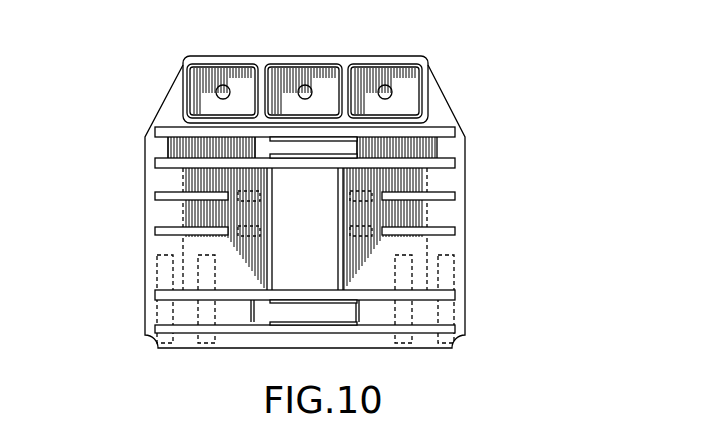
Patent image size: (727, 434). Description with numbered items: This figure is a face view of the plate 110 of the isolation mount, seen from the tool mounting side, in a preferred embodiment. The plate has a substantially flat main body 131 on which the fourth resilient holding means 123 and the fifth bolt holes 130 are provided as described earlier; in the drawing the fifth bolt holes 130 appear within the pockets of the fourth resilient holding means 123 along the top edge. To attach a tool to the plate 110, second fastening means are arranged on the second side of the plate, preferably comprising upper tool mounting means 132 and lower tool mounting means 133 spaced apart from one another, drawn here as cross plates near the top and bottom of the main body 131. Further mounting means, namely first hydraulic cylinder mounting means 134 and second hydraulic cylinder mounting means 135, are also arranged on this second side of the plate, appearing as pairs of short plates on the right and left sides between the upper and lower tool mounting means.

The plate 110 is at (476, 70).
The fourth resilient holding means 123 is at (190, 98).
The fifth bolt holes 130 is at (223, 85).
The main body 131 is at (153, 148).
The upper tool mounting means 132 is at (437, 165).
The lower tool mounting means 133 is at (457, 328).
The first hydraulic cylinder mounting means 134 is at (457, 230).
The second hydraulic cylinder mounting means 135 is at (173, 230).